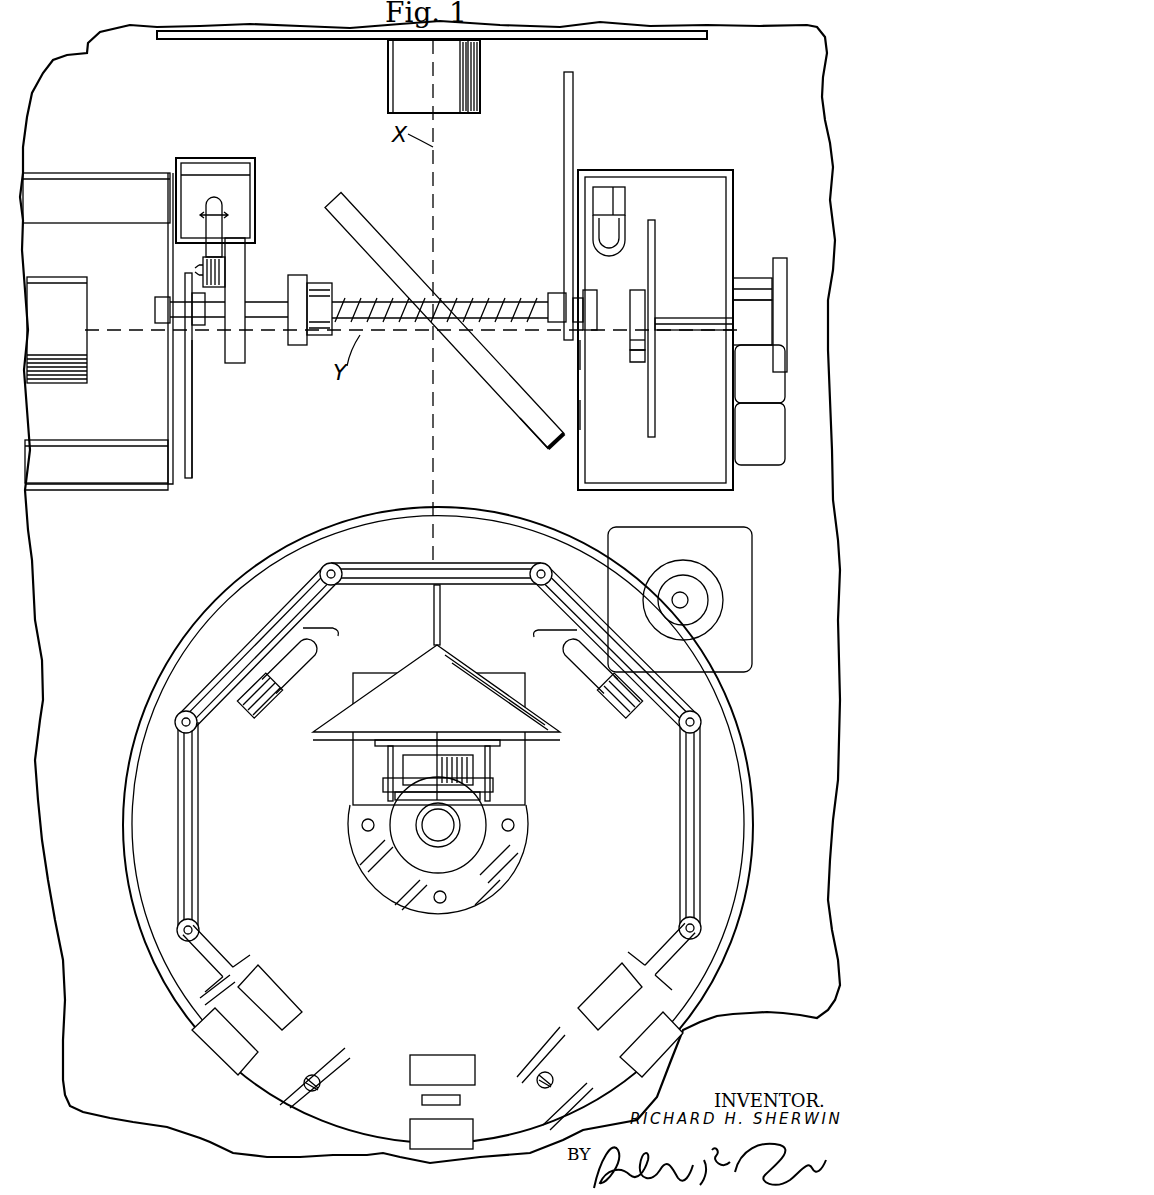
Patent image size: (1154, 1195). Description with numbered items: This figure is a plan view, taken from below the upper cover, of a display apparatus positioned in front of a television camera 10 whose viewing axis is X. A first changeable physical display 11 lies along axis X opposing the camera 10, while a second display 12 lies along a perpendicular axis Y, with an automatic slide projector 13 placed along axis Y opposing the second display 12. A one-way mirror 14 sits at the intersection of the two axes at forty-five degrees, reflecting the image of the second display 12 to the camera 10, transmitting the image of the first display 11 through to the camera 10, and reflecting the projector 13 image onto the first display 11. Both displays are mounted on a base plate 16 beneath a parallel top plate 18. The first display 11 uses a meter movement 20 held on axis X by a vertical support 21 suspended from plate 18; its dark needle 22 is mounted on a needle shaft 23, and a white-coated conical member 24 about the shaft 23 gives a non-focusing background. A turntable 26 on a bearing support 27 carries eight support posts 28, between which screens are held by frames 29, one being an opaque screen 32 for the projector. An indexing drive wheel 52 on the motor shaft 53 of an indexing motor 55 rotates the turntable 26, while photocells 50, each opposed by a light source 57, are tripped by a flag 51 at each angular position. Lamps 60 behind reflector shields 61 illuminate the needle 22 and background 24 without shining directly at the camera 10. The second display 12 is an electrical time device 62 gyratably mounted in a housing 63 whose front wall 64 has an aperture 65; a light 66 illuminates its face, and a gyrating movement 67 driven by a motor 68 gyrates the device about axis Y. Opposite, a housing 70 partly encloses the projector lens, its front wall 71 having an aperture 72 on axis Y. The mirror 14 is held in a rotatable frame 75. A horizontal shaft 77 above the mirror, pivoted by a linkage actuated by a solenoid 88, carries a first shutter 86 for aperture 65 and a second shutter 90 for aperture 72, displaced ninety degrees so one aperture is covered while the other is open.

The television camera 10 is at (466, 118).
The first changeable physical display 11 is at (377, 556).
The second display 12 is at (626, 361).
The automatic slide projector 13 is at (83, 345).
The one-way mirror 14 is at (358, 248).
The base plate 16 is at (805, 909).
The top plate 18 is at (507, 1058).
The meter movement 20 is at (402, 776).
The vertical support 21 is at (528, 813).
The needle 22 is at (433, 596).
The needle shaft 23 is at (440, 620).
The conical member 24 is at (455, 674).
The turntable 26 is at (738, 816).
The bearing support 27 is at (428, 833).
The support posts 28 is at (186, 712).
The frames 29 is at (337, 583).
The opaque screen 32 is at (196, 813).
The photocells 50 is at (246, 1056).
The flag 51 is at (460, 1100).
The drive wheel 52 is at (697, 583).
The motor shaft 53 is at (688, 600).
The indexing motor 55 is at (742, 590).
The light source 57 is at (290, 1002).
The lamps 60 is at (295, 673).
The reflector shields 61 is at (338, 631).
The electrical time device 62 is at (638, 292).
The housing 63 is at (673, 172).
The front wall 64 is at (580, 413).
The aperture 65 is at (578, 358).
The light 66 is at (630, 236).
The gyrating movement 67 is at (657, 320).
The motor 68 is at (762, 341).
The housing 70 is at (152, 492).
The front wall 71 is at (176, 413).
The aperture 72 is at (170, 368).
The rotatable frame 75 is at (506, 383).
The horizontal shaft 77 is at (505, 300).
The first shutter 86 is at (574, 147).
The solenoid 88 is at (218, 165).
The second shutter 90 is at (192, 462).